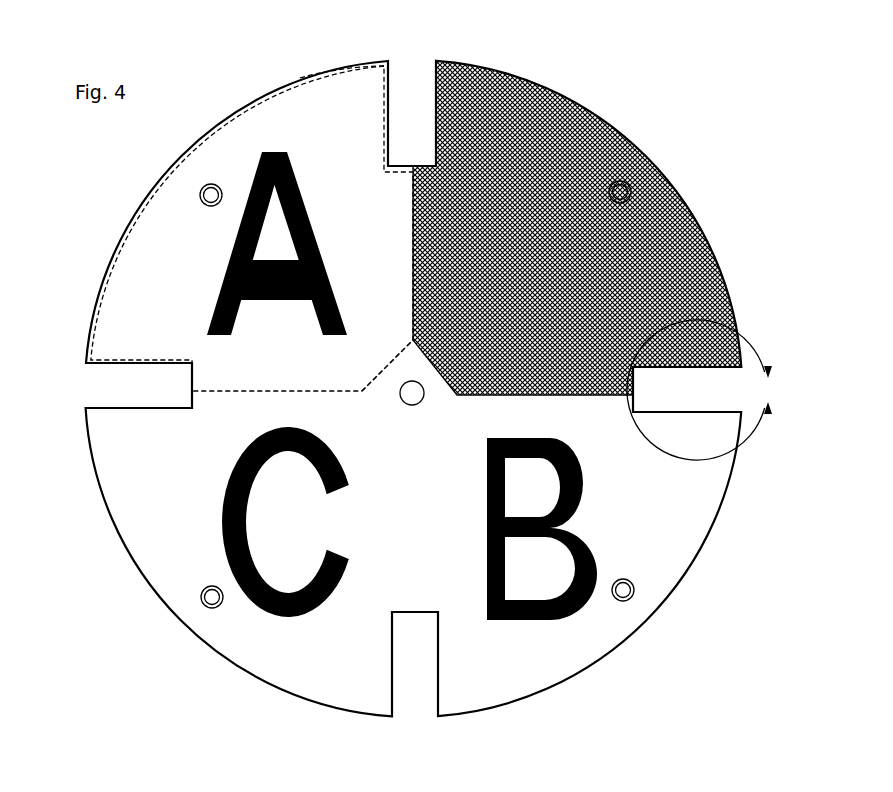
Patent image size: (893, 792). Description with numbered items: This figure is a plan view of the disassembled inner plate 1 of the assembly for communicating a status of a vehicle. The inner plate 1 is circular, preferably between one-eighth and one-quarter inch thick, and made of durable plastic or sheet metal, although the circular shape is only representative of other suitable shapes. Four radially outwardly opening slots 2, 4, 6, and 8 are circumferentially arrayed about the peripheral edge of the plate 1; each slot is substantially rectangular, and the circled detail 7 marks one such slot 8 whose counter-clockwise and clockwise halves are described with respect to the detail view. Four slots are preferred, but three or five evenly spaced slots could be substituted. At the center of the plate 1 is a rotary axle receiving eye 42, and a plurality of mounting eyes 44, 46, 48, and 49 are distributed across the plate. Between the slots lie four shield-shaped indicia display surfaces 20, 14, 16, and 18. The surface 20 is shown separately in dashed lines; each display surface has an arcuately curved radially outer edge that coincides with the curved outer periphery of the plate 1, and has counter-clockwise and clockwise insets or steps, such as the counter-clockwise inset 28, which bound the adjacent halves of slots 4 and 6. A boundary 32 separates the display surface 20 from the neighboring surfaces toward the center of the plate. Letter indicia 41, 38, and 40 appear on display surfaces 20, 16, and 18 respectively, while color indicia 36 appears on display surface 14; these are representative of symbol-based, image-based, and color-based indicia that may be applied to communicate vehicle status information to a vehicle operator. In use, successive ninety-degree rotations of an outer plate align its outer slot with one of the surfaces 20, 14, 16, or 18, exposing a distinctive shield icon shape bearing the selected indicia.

The inner plate 1 is at (573, 100).
The radially outwardly opening slot 2 is at (413, 688).
The radially outwardly opening slot 4 is at (108, 385).
The radially outwardly opening slot 6 is at (415, 92).
The detail view indicator 7 is at (700, 390).
The radially outwardly opening slot 8 is at (688, 390).
The indicia display surface 14 is at (648, 265).
The indicia display surface 16 is at (653, 522).
The indicia display surface 18 is at (170, 538).
The indicia display surface 20 is at (348, 108).
The counter-clockwise inset 28 is at (140, 356).
The sector boundary 32 is at (383, 373).
The color indicia 36 is at (517, 138).
The letter indicia 38 is at (547, 620).
The letter indicia 40 is at (278, 615).
The letter indicia 41 is at (257, 167).
The rotary axle receiving eye 42 is at (412, 406).
The mounting eye 44 is at (206, 188).
The mounting eye 46 is at (621, 184).
The mounting eye 48 is at (630, 594).
The mounting eye 49 is at (205, 602).